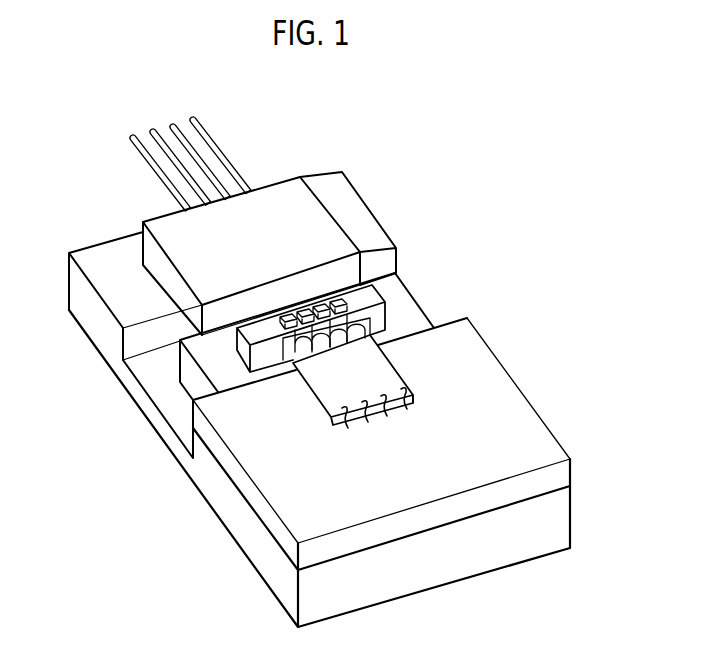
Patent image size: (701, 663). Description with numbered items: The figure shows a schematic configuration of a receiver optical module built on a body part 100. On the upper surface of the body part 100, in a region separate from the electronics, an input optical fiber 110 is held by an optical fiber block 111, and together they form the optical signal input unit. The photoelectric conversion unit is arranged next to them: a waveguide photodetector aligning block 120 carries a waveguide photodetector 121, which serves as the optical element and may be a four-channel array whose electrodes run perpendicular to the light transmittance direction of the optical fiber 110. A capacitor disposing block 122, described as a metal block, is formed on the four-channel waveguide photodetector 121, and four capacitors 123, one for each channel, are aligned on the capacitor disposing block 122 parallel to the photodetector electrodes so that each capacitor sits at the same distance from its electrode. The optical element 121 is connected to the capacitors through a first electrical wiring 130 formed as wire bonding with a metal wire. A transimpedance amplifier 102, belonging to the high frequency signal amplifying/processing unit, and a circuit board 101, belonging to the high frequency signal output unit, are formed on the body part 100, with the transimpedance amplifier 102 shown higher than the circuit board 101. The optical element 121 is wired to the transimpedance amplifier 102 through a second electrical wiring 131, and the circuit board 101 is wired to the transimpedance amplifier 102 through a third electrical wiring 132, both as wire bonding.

The body part 100 is at (95, 253).
The circuit board 101 is at (440, 490).
The transimpedance amplifier 102 is at (325, 387).
The input optical fiber 110 is at (194, 106).
The optical fiber block 111 is at (294, 184).
The waveguide photodetector aligning block 120 is at (188, 384).
The waveguide photodetector 121 is at (250, 302).
The capacitor disposing block 122 is at (378, 290).
The capacitor 123 is at (338, 300).
The first electrical wiring 130 is at (256, 378).
The second electrical wiring 131 is at (380, 313).
The third electrical wiring 132 is at (413, 402).